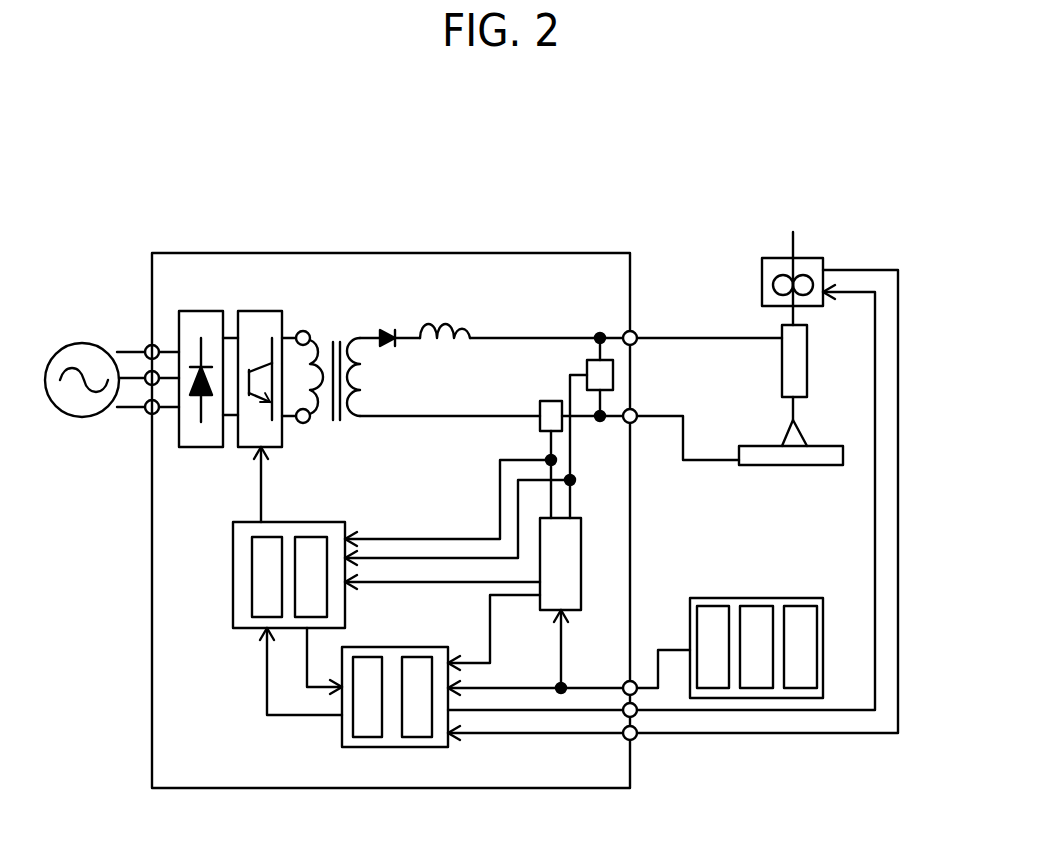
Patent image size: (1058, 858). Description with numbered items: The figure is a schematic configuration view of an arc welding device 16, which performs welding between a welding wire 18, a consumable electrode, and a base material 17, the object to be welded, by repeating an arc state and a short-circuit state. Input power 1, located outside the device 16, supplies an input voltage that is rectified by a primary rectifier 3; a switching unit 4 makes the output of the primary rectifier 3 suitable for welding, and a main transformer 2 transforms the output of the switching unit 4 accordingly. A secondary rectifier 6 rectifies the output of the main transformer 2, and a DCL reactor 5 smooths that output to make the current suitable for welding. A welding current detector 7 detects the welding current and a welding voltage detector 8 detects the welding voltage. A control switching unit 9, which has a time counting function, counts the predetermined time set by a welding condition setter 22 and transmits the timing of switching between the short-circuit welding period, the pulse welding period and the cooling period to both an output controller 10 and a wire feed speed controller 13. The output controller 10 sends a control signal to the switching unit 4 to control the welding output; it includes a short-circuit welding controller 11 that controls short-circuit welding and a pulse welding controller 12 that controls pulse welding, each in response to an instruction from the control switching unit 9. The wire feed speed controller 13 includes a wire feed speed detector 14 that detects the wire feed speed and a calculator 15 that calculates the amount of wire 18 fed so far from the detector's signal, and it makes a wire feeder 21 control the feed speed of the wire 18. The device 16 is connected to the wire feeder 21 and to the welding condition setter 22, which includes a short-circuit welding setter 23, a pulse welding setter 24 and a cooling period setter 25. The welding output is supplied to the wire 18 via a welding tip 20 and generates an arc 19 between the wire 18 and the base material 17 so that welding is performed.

The input power 1 is at (67, 421).
The main transformer 2 is at (330, 337).
The primary rectifier 3 is at (190, 448).
The switching unit 4 is at (247, 448).
The DCL reactor 5 is at (452, 310).
The secondary rectifier 6 is at (387, 326).
The welding current detector 7 is at (539, 425).
The welding voltage detector 8 is at (593, 360).
The control switching unit 9 is at (582, 548).
The output controller 10 is at (257, 544).
The short-circuit welding controller 11 is at (270, 537).
The pulse welding controller 12 is at (315, 537).
The wire feed speed controller 13 is at (355, 745).
The wire feed speed detector 14 is at (362, 737).
The calculator 15 is at (418, 737).
The arc welding device 16 is at (186, 790).
The base material 17 is at (797, 465).
The welding wire 18 is at (792, 245).
The arc 19 is at (807, 438).
The welding tip 20 is at (807, 365).
The wire feeder 21 is at (762, 280).
The welding condition setter 22 is at (745, 617).
The short-circuit welding setter 23 is at (712, 606).
The pulse welding setter 24 is at (757, 606).
The cooling period setter 25 is at (812, 606).